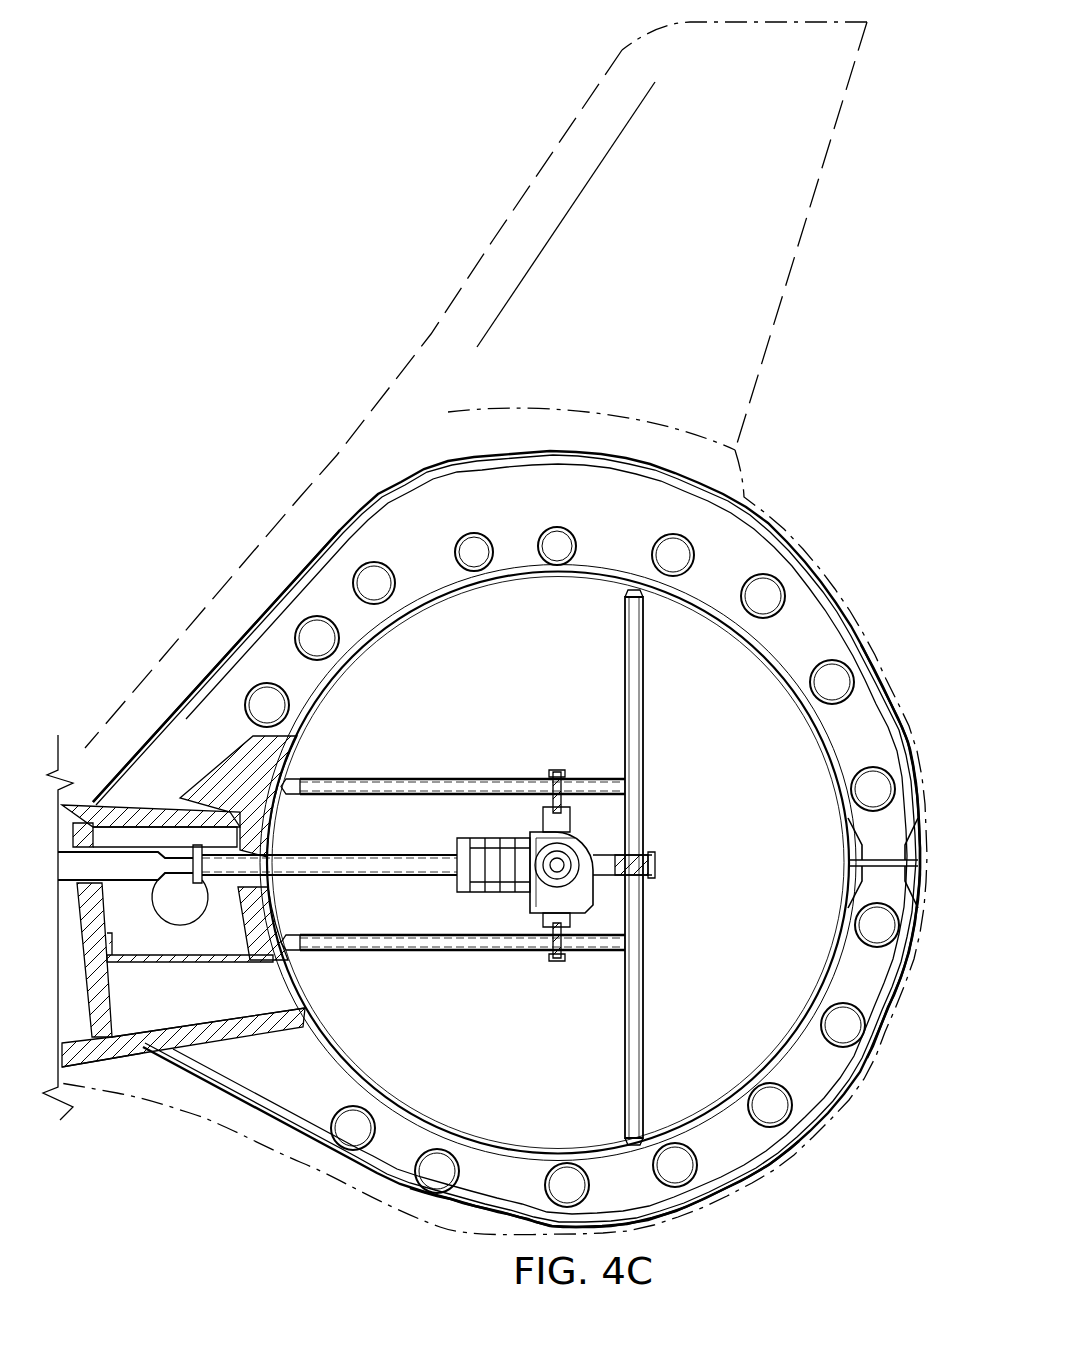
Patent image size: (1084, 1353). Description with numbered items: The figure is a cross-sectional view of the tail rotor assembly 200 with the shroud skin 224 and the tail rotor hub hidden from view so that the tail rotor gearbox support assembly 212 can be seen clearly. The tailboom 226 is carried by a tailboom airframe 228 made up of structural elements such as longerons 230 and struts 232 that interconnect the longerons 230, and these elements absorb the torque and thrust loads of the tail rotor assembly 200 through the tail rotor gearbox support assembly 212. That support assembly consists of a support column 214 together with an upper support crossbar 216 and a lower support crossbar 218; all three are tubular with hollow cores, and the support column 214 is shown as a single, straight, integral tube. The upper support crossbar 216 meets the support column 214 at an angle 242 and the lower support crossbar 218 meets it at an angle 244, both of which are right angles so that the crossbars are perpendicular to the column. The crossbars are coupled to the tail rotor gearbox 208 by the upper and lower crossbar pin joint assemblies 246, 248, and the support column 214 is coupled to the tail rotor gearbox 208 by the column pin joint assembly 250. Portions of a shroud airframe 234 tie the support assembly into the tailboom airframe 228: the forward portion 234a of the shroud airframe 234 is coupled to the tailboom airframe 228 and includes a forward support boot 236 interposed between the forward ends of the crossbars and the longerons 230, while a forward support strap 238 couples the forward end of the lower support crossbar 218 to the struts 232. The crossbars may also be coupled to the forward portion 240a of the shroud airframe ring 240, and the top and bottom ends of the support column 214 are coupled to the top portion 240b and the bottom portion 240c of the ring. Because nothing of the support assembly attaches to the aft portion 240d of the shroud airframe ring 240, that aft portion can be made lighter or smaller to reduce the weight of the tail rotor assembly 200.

The tail rotor assembly 200 is at (189, 250).
The tail rotor gearbox 208 is at (520, 900).
The tail rotor gearbox support assembly 212 is at (386, 775).
The support column 214 is at (625, 652).
The upper support crossbar 216 is at (470, 778).
The lower support crossbar 218 is at (446, 955).
The shroud skin 224 is at (305, 1183).
The tailboom 226 is at (127, 1062).
The tailboom airframe 228 is at (183, 1020).
The struts 232 is at (110, 1005).
The longerons 230 is at (140, 795).
The shroud airframe 234 is at (462, 385).
The forward portion of shroud airframe 234a is at (175, 697).
The forward support boot 236 is at (240, 758).
The forward support strap 238 is at (142, 955).
The shroud airframe ring 240 is at (527, 827).
The forward portion of shroud airframe ring 240a is at (270, 604).
The top portion of shroud airframe ring 240b is at (648, 463).
The bottom portion of shroud airframe ring 240c is at (465, 1215).
The aft portion of shroud airframe ring 240d is at (882, 678).
The angle between upper support crossbar and support column 242 is at (583, 773).
The angle between lower support crossbar and support column 244 is at (583, 952).
The upper crossbar pin joint assembly 246 is at (553, 770).
The lower crossbar pin joint assembly 248 is at (553, 960).
The column pin joint assembly 250 is at (655, 862).